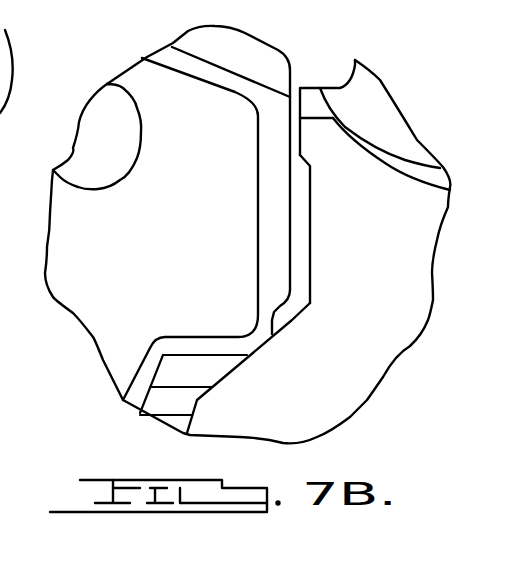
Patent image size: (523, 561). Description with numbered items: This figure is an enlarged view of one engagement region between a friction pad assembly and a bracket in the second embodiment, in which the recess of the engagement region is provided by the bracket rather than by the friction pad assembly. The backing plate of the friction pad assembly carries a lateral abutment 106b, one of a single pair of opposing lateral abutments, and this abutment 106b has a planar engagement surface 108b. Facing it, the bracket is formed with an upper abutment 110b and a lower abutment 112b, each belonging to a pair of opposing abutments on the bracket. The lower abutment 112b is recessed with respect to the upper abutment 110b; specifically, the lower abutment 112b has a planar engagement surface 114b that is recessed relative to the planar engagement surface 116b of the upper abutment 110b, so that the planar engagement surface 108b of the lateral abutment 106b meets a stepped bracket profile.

The lateral abutment 106b is at (277, 202).
The engagement surface 108b is at (296, 232).
The upper abutment 110b is at (306, 152).
The lower abutment 112b is at (313, 238).
The planar engagement surface 114b is at (308, 278).
The planar engagement surface 116b is at (305, 156).